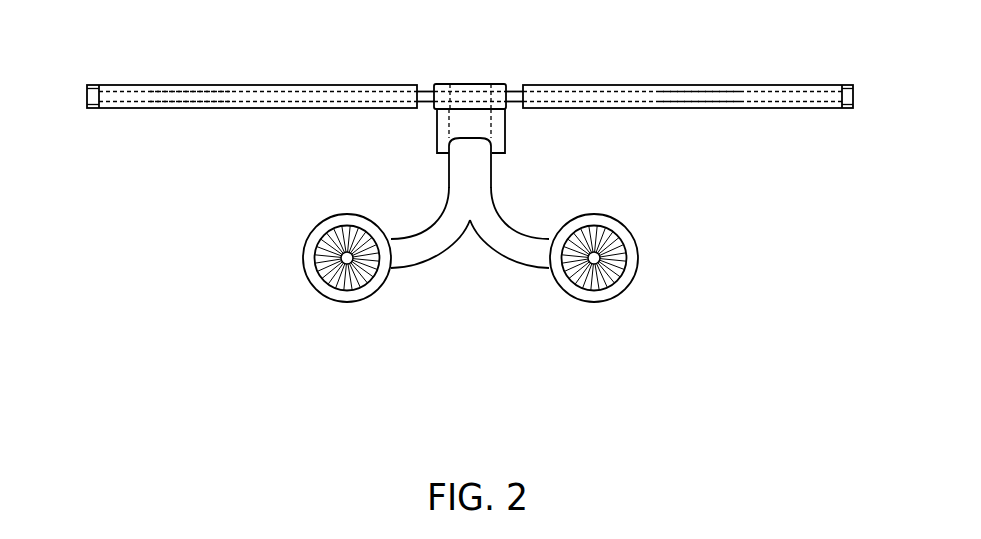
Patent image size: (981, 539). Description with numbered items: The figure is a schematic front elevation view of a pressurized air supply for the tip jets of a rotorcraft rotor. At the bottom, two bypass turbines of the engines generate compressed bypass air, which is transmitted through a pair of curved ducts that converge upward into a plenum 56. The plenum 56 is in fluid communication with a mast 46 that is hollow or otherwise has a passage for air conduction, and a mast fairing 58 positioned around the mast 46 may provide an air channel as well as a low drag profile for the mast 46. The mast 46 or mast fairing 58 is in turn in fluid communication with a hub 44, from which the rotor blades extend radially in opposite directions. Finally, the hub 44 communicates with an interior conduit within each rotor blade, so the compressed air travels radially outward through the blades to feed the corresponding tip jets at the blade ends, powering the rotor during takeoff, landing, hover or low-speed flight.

The hub 44 is at (468, 88).
The mast 46 is at (507, 127).
The plenum 56 is at (483, 170).
The mast fairing 58 is at (437, 127).